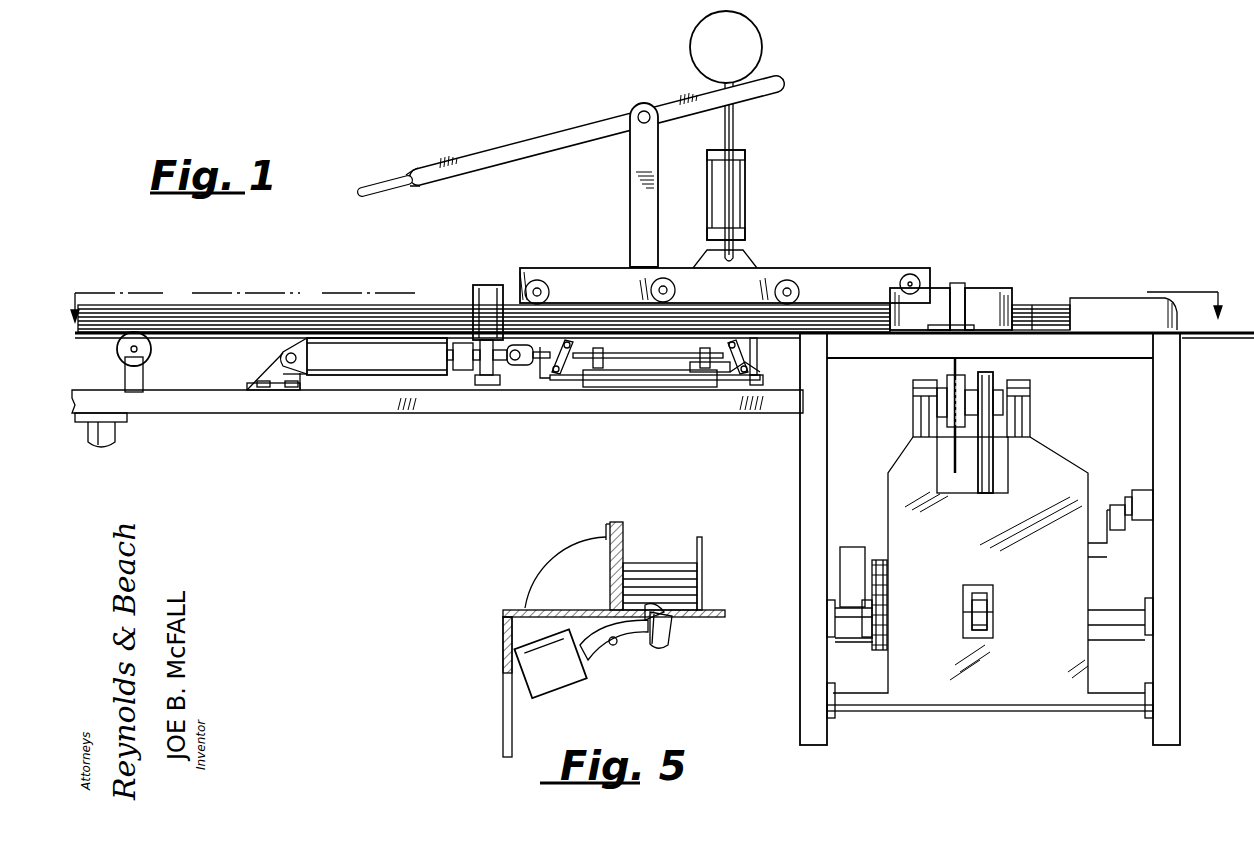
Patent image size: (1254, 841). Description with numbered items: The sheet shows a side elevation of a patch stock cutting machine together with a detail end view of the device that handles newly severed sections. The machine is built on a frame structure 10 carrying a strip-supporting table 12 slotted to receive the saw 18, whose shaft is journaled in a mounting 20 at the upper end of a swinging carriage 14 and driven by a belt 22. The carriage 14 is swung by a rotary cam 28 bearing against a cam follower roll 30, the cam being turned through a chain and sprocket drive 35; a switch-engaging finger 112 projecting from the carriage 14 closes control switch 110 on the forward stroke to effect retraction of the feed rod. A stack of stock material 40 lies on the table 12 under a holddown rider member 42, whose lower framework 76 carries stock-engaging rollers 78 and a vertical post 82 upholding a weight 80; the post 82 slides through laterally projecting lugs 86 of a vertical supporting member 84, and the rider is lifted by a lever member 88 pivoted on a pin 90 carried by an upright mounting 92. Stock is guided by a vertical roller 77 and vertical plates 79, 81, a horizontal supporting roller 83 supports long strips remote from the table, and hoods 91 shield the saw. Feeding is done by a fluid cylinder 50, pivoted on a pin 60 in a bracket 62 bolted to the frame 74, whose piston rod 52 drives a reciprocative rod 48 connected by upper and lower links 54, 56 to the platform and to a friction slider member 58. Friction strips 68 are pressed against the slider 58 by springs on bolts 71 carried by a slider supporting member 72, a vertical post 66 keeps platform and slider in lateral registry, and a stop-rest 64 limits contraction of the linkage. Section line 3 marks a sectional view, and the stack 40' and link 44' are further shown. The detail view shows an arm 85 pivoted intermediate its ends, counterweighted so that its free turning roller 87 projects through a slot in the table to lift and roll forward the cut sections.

In FIG. 1, the section line 3 is at (649, 296).
In FIG. 1, the frame structure 10 is at (1172, 367).
In FIG. 5, the frame structure 10 is at (503, 662).
In FIG. 1, the strip-supporting table 12 is at (529, 336).
In FIG. 5, the strip-supporting table 12 is at (690, 620).
In FIG. 1, the swinging carriage 14 is at (1072, 472).
In FIG. 1, the saw 18 is at (953, 470).
In FIG. 1, the mounting 20 is at (913, 411).
In FIG. 1, the belt 22 is at (986, 465).
In FIG. 1, the rotary cam 28 is at (985, 636).
In FIG. 1, the cam follower roll 30 is at (977, 592).
In FIG. 1, the chain and sprocket drive 35 is at (866, 605).
In FIG. 1, the stack of stock material 40 is at (484, 297).
In FIG. 5, the stack of stock material 40 is at (662, 561).
In FIG. 1, the second stack 40' is at (1042, 301).
In FIG. 1, the holddown rider member 42 is at (750, 262).
In FIG. 1, the link 44' is at (588, 354).
In FIG. 1, the reciprocative rod 48 is at (655, 360).
In FIG. 1, the fluid cylinder 50 is at (382, 366).
In FIG. 1, the piston rod 52 is at (468, 358).
In FIG. 1, the upper links 54 is at (758, 351).
In FIG. 1, the lower links 56 is at (737, 366).
In FIG. 1, the friction slider member 58 is at (568, 382).
In FIG. 1, the pin 60 is at (284, 357).
In FIG. 1, the bracket 62 is at (260, 374).
In FIG. 1, the stop-rest 64 is at (545, 380).
In FIG. 1, the vertical post 66 is at (763, 379).
In FIG. 1, the friction strips 68 is at (636, 374).
In FIG. 1, the bolts 71 is at (724, 347).
In FIG. 1, the slider supporting member 72 is at (686, 382).
In FIG. 1, the frame 74 is at (306, 405).
In FIG. 1, the lower framework 76 is at (840, 268).
In FIG. 1, the vertical roller 77 is at (484, 300).
In FIG. 1, the stock-engaging rollers 78 is at (660, 290).
In FIG. 1, the vertical plate 79 is at (922, 300).
In FIG. 5, the vertical plate 79 is at (618, 522).
In FIG. 1, the weight 80 is at (761, 48).
In FIG. 1, the vertical plate 81 is at (1113, 298).
In FIG. 1, the vertical post 82 is at (735, 127).
In FIG. 1, the horizontal supporting roller 83 is at (152, 349).
In FIG. 1, the vertical supporting member 84 is at (746, 184).
In FIG. 5, the arm 85 is at (630, 646).
In FIG. 1, the laterally projecting lugs 86 is at (746, 155).
In FIG. 5, the free turning roller 87 is at (672, 634).
In FIG. 1, the lever member 88 is at (498, 164).
In FIG. 1, the pin 90 is at (645, 110).
In FIG. 1, the hood 91 is at (960, 283).
In FIG. 5, the hood 91 is at (565, 568).
In FIG. 1, the upright mounting 92 is at (634, 190).
In FIG. 1, the control switch 110 is at (1140, 518).
In FIG. 1, the switch-engaging finger 112 is at (1106, 510).